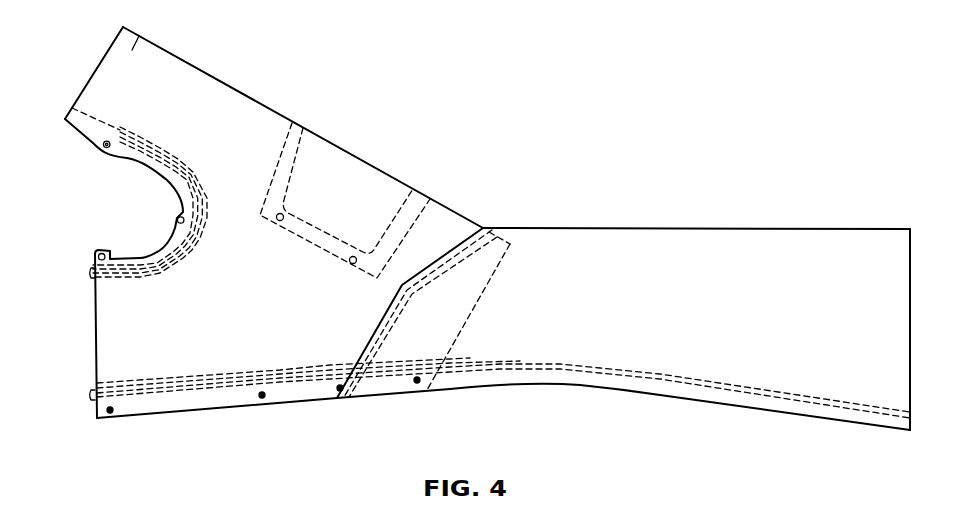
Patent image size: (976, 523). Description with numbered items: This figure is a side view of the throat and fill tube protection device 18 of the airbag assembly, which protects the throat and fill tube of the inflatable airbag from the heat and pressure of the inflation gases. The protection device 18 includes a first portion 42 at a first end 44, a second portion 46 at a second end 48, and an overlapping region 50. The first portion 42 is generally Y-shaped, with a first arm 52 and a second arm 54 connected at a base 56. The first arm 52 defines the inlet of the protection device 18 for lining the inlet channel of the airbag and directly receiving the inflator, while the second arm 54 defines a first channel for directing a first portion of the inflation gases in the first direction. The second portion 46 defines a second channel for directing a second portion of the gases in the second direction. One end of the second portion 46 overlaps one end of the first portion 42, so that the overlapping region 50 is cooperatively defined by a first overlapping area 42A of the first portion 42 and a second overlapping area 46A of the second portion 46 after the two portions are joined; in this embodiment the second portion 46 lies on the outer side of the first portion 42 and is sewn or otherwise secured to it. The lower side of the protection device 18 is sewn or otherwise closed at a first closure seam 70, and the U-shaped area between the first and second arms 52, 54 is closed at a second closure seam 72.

The throat and fill tube protection device 18 is at (682, 100).
The first portion 42 is at (175, 417).
The first overlapping area 42A is at (494, 273).
The first end 44 is at (95, 343).
The second portion 46 is at (678, 399).
The second overlapping area 46A is at (442, 318).
The second end 48 is at (912, 247).
The overlapping region 50 is at (387, 397).
The first arm 52 is at (202, 87).
The second arm 54 is at (167, 345).
The base 56 is at (440, 223).
The first closure seam 70 is at (838, 408).
The second closure seam 72 is at (143, 268).